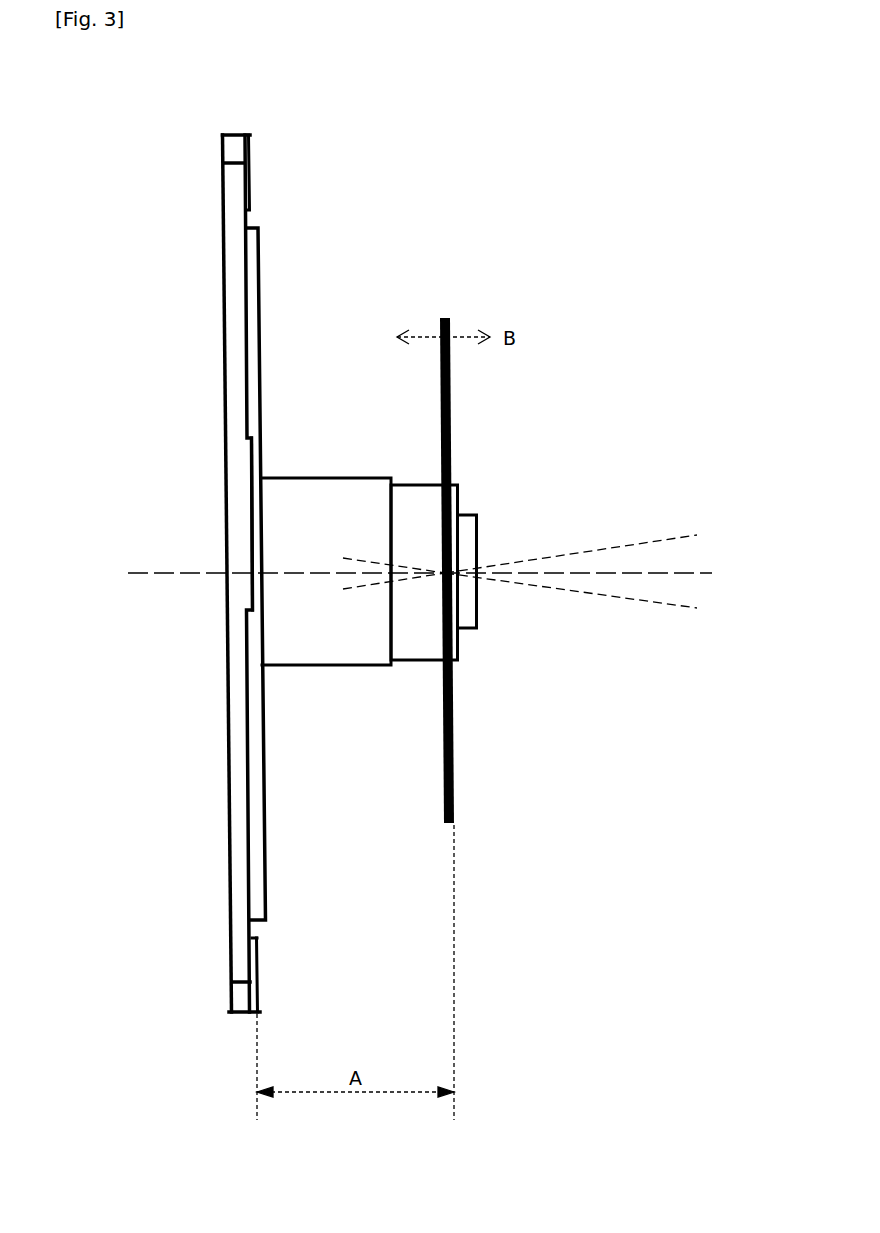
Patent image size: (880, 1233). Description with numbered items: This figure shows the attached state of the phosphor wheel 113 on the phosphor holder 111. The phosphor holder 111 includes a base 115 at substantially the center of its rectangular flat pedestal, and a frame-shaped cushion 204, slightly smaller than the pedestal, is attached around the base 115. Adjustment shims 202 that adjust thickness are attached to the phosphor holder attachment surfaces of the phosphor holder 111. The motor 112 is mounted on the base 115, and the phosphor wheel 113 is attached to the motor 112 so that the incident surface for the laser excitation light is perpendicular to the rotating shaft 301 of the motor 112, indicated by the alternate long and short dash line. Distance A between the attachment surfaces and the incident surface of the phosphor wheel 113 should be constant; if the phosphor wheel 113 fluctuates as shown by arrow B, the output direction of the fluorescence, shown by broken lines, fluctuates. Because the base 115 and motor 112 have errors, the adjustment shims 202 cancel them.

The phosphor holder 111 is at (224, 265).
The adjustment shims 202 is at (250, 139).
The cushion 204 is at (263, 240).
The base 115 is at (333, 667).
The motor 112 is at (424, 663).
The phosphor wheel 113 is at (444, 316).
The rotating shaft 301 is at (170, 573).